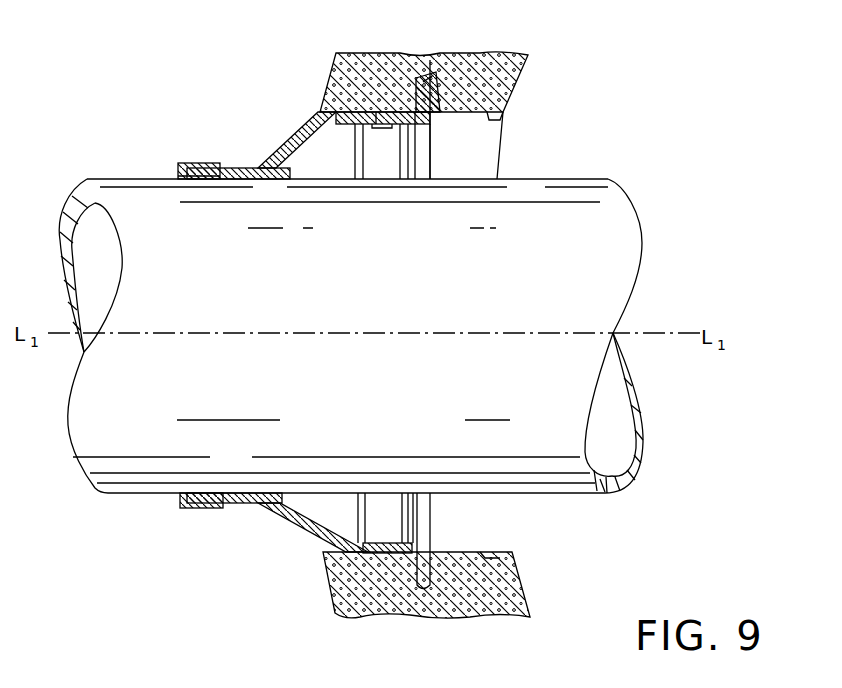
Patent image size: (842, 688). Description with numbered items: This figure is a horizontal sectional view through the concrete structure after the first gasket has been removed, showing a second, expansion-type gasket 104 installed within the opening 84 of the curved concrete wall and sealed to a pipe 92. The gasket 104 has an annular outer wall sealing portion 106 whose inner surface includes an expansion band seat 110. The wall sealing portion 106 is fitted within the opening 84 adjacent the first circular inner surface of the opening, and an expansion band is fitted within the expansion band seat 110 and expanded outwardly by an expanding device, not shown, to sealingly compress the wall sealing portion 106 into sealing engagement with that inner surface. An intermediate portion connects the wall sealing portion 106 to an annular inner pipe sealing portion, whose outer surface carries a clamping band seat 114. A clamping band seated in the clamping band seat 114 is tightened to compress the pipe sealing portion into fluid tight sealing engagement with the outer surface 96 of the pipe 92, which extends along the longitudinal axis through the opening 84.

The opening 84 is at (507, 141).
The pipe 92 is at (644, 432).
The outer surface 96 is at (368, 275).
The expansion-type gasket 104 is at (260, 124).
The wall sealing portion 106 is at (376, 113).
The expansion band seat 110 is at (383, 113).
The clamping band seat 114 is at (178, 176).